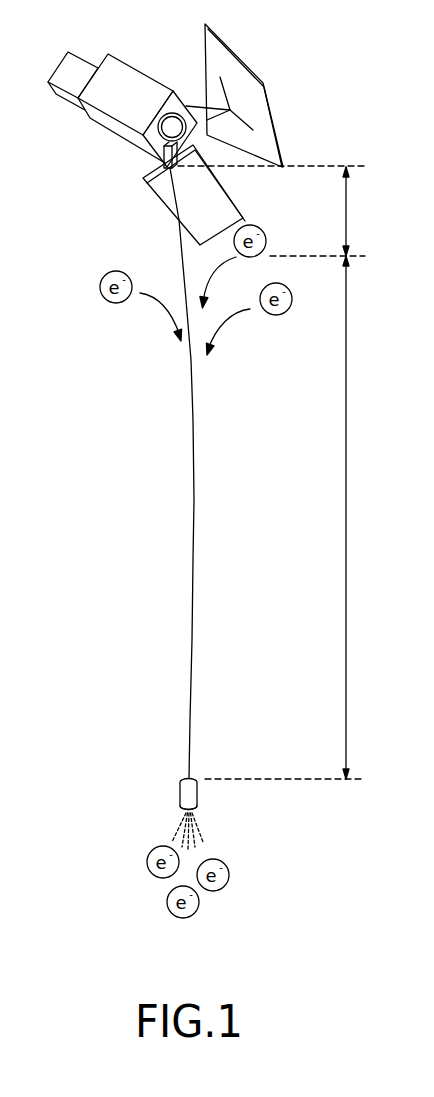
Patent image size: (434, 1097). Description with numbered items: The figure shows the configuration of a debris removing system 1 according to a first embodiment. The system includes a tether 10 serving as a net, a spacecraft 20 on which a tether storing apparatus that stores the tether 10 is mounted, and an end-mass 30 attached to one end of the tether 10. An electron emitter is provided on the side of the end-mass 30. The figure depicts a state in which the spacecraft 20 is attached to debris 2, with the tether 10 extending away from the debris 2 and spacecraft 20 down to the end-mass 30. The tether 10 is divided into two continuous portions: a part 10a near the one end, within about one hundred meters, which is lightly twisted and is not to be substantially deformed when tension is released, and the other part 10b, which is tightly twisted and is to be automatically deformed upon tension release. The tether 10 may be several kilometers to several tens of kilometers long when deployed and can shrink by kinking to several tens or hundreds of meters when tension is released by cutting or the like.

The debris removing system 1 is at (210, 446).
The debris 2 is at (137, 70).
The tether 10 is at (192, 482).
The part of the tether 10a is at (271, 211).
The other part of the tether 10b is at (285, 517).
The spacecraft 20 is at (163, 163).
The end-mass 30 is at (178, 791).